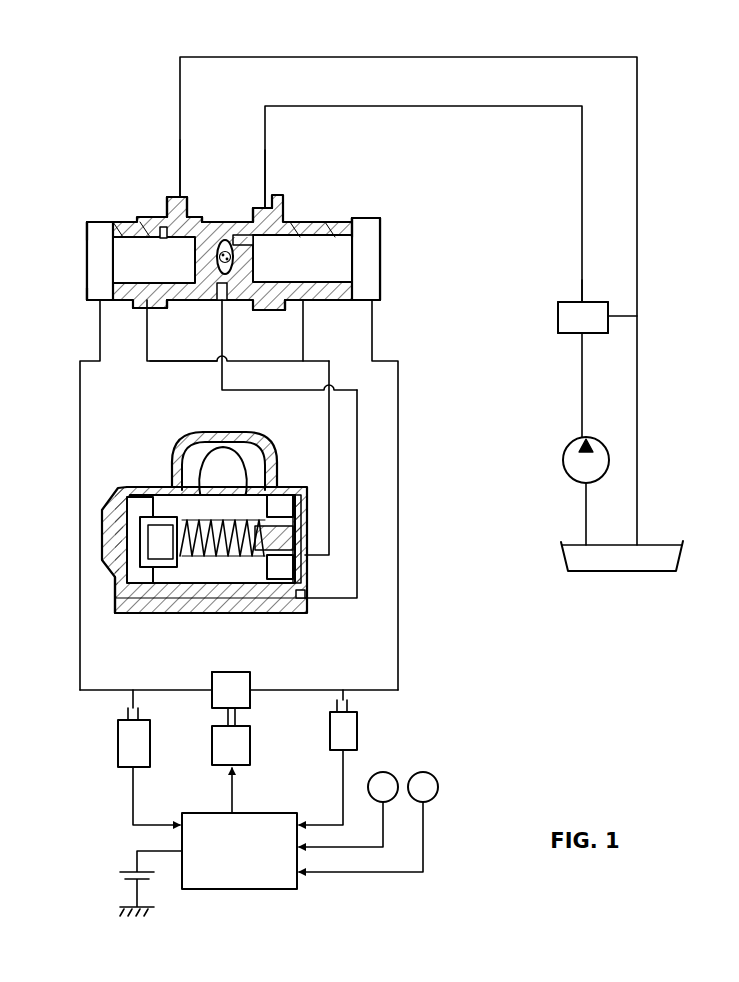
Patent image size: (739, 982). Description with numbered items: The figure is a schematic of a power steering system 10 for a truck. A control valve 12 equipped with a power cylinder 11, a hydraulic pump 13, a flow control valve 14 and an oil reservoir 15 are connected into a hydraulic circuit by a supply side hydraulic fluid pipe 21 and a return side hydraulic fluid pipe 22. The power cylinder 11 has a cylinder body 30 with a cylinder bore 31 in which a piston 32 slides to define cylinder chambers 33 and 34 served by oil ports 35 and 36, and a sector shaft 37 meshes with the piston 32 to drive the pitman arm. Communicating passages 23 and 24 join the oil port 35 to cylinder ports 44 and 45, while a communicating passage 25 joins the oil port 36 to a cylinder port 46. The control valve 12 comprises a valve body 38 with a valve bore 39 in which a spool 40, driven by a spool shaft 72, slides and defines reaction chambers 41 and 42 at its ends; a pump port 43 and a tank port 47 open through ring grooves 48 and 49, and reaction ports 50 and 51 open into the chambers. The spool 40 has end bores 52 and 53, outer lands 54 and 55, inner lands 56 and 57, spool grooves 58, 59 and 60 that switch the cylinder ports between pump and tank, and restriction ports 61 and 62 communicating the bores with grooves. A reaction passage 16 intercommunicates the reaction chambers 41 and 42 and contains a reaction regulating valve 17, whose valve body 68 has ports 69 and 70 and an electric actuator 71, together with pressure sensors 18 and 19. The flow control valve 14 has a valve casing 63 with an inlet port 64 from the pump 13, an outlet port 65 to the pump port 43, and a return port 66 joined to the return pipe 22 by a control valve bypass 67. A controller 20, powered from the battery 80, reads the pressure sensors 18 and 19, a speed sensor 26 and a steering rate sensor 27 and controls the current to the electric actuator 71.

The power steering system 10 is at (365, 18).
The power cylinder 11 is at (169, 453).
The control valve 12 is at (395, 206).
The hydraulic pump 13 is at (563, 470).
The flow control valve 14 is at (556, 318).
The oil reservoir 15 is at (564, 561).
The reaction passage 16 is at (401, 636).
The reaction regulating valve 17 is at (253, 674).
The pressure sensor 18 is at (360, 731).
The pressure sensor 19 is at (116, 746).
The controller 20 is at (224, 862).
The supply side hydraulic fluid pipe 21 is at (427, 106).
The return side hydraulic fluid pipe 22 is at (286, 56).
The communicating passage 23 is at (328, 428).
The communicating passage 24 is at (190, 363).
The communicating passage 25 is at (358, 440).
The speed sensor 26 is at (386, 773).
The steering rate sensor 27 is at (431, 774).
The cylinder body 30 is at (232, 614).
The cylinder bore 31 is at (142, 496).
The piston 32 is at (182, 598).
The cylinder chamber 33 is at (287, 500).
The cylinder chamber 34 is at (138, 610).
The oil port 35 is at (307, 553).
The oil port 36 is at (306, 597).
The sector shaft 37 is at (214, 482).
The valve body 38 is at (111, 222).
The valve bore 39 is at (88, 228).
The spool 40 is at (360, 218).
The reaction chamber 41 is at (372, 258).
The reaction chamber 42 is at (92, 266).
The pump port 43 is at (266, 219).
The cylinder port 44 is at (322, 306).
The cylinder port 45 is at (112, 306).
The cylinder port 46 is at (192, 308).
The tank port 47 is at (167, 205).
The ring groove 48 is at (300, 222).
The ring groove 49 is at (200, 217).
The reaction port 50 is at (380, 306).
The reaction port 51 is at (92, 306).
The bore 52 is at (342, 230).
The bore 53 is at (147, 233).
The land 54 is at (330, 222).
The land 55 is at (140, 222).
The land 56 is at (262, 204).
The land 57 is at (181, 188).
The spool groove 58 is at (276, 312).
The spool groove 59 is at (228, 306).
The spool groove 60 is at (152, 306).
The restriction port 61 is at (262, 240).
The restriction port 62 is at (160, 240).
The valve casing 63 is at (557, 304).
The inlet port 64 is at (582, 342).
The outlet port 65 is at (582, 299).
The return port 66 is at (609, 330).
The control valve bypass 67 is at (626, 316).
The valve body 68 is at (212, 708).
The port 69 is at (252, 697).
The port 70 is at (211, 684).
The electric actuator 71 is at (252, 750).
The spool shaft 72 is at (228, 241).
The battery 80 is at (120, 880).